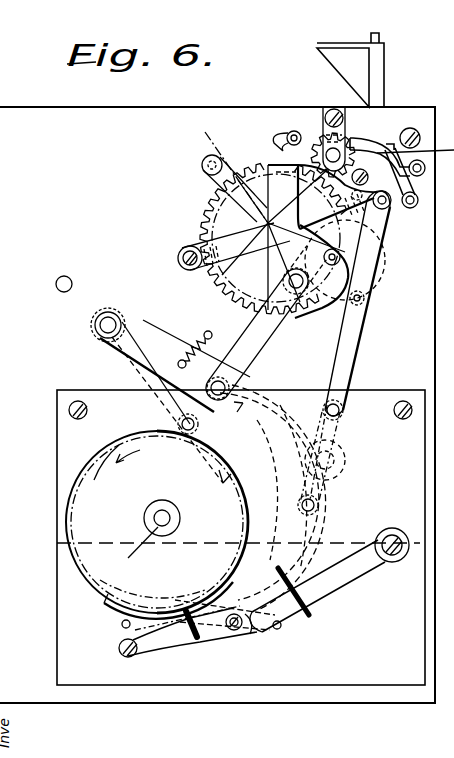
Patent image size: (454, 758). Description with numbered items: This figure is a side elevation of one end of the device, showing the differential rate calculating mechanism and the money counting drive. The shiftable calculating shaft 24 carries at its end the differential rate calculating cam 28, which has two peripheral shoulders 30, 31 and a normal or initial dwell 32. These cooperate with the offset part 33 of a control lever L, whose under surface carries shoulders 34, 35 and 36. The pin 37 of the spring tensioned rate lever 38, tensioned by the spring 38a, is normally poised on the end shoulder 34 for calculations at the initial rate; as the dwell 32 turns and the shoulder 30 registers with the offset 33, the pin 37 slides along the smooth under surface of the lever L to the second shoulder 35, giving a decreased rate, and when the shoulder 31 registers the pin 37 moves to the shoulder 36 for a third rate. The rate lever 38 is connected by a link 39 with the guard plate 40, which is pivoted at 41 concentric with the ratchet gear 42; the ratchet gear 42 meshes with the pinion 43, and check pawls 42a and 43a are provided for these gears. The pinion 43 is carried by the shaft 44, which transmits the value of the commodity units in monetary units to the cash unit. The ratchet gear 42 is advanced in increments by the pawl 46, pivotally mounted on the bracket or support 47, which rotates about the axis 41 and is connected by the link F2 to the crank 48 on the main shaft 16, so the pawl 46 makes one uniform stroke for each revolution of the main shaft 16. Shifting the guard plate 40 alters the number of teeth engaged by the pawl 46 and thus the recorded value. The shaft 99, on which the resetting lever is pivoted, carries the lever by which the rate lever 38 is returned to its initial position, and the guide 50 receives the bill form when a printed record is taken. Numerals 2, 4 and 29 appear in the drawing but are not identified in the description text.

The guide 50 is at (376, 92).
The shaft 44 is at (330, 150).
The pinion 43 is at (333, 155).
The check pawl 43a is at (380, 143).
The frame member 4 is at (446, 158).
The frame 2 is at (449, 268).
The ratchet gear 42 is at (250, 166).
The check pawl 42a is at (285, 135).
The pivot 41 is at (240, 214).
The bracket or support 47 is at (205, 240).
The guard plate 40 is at (370, 250).
The pawl 46 is at (365, 252).
The link F2 is at (345, 355).
The link 39 is at (290, 320).
The shaft 99 is at (97, 333).
The rate lever 38 is at (141, 332).
The spring 38a is at (190, 340).
The crank 48 is at (343, 430).
The main shaft 16 is at (330, 460).
The differential rate calculating cam 28 is at (157, 522).
The hub 29 is at (145, 516).
The shiftable calculating shaft 24 is at (138, 551).
The normal or initial dwell 32 is at (258, 515).
The peripheral shoulder 31 is at (98, 450).
The offset part 33 is at (156, 600).
The peripheral shoulder 30 is at (110, 612).
The control lever L is at (318, 585).
The end shoulder 34 is at (133, 657).
The second shoulder 35 is at (192, 645).
The shoulder 36 is at (250, 634).
The pin 37 is at (118, 644).